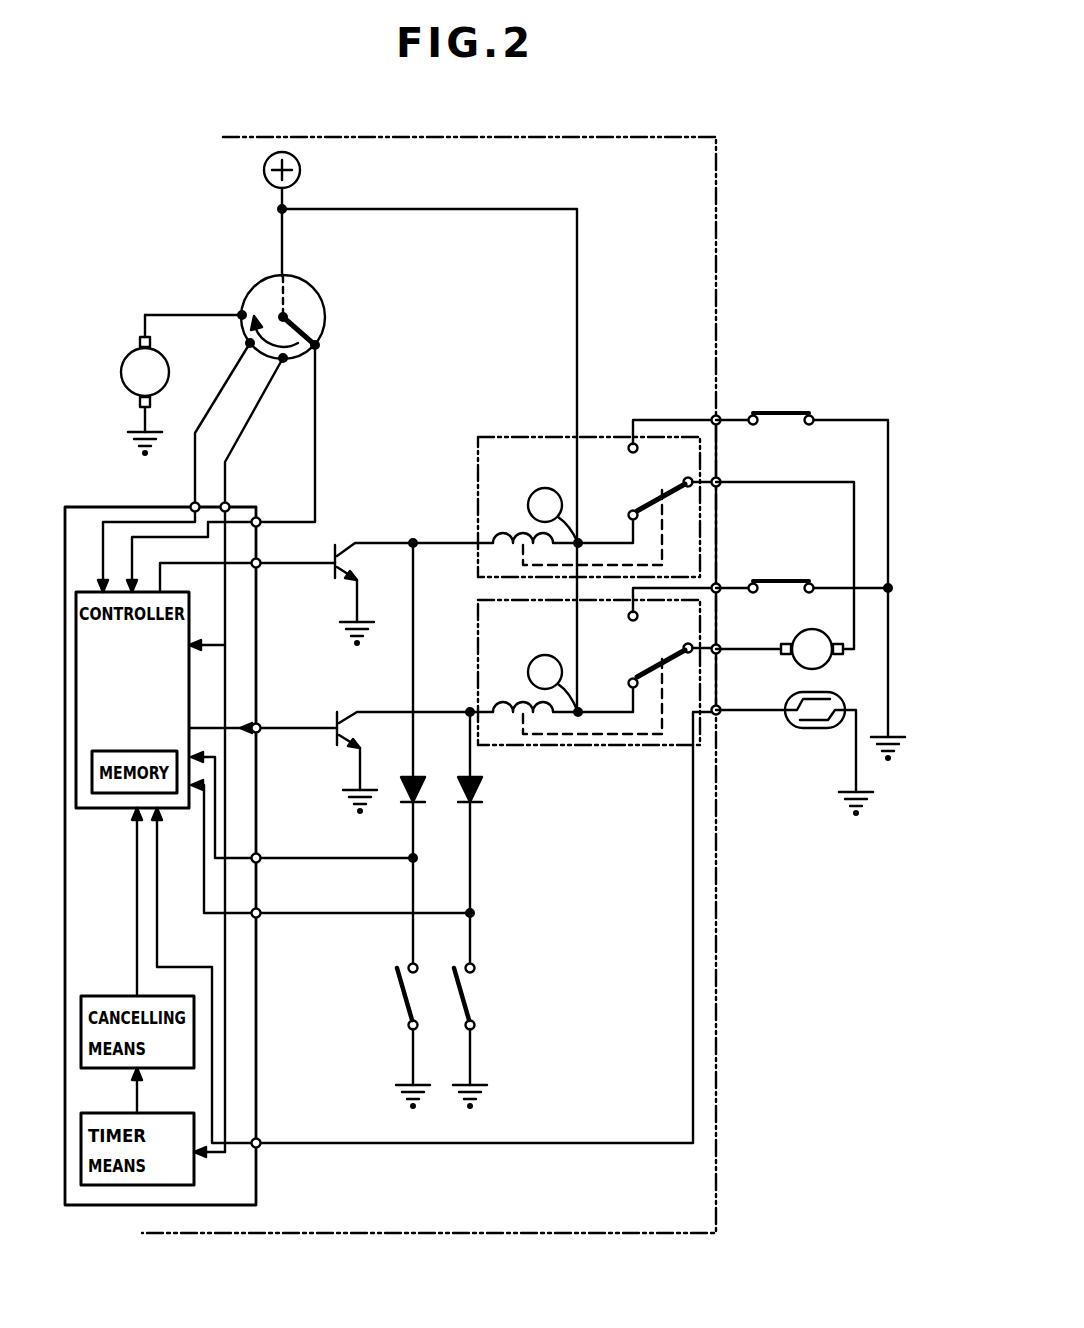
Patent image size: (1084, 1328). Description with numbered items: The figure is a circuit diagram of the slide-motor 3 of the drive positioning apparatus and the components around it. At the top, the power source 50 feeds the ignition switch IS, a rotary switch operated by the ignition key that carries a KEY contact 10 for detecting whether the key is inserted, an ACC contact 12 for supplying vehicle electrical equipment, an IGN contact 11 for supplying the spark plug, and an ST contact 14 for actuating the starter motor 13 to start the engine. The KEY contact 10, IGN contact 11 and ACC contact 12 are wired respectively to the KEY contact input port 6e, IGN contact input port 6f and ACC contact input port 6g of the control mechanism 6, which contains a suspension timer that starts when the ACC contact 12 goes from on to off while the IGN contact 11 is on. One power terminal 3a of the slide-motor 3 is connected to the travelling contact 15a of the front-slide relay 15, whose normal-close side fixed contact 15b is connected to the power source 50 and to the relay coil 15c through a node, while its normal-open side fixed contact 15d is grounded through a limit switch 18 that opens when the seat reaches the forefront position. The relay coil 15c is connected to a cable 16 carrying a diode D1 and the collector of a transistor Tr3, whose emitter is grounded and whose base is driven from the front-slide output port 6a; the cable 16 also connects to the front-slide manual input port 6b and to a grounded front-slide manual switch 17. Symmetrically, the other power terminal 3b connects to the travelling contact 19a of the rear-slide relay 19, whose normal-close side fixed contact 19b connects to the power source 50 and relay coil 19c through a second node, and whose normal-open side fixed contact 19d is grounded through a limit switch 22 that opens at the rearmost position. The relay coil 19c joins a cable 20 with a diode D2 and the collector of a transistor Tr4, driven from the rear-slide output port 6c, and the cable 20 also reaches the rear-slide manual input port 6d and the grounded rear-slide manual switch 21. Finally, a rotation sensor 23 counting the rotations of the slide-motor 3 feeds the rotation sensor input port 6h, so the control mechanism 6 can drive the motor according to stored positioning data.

The power source 50 is at (300, 170).
The ignition switch IS is at (318, 290).
The ST contact 14 is at (242, 315).
The IGN contact 11 is at (245, 344).
The ACC contact 12 is at (286, 360).
The KEY contact 10 is at (320, 345).
The starter motor 13 is at (127, 350).
The control mechanism 6 is at (256, 541).
The IGN contact input port 6f is at (190, 505).
The ACC contact input port 6g is at (228, 505).
The KEY contact input port 6e is at (258, 520).
The front-slide output port 6a is at (258, 566).
The rear-slide output port 6c is at (258, 726).
The front-slide manual input port 6b is at (258, 856).
The rear-slide manual input port 6d is at (258, 912).
The rotation sensor input port 6h is at (258, 1141).
The transistor Tr3 is at (374, 594).
The transistor Tr4 is at (403, 762).
The cable 16 is at (413, 645).
The diode D1 is at (431, 776).
The front-slide manual switch 17 is at (380, 1005).
The cable 20 is at (470, 853).
The diode D2 is at (492, 782).
The rear-slide manual switch 21 is at (490, 998).
The front-slide relay 15 is at (606, 437).
The relay coil 15c is at (517, 533).
The travelling contact 15a is at (655, 497).
The normal-open side fixed contact 15d is at (638, 450).
The normal-close side fixed contact 15b is at (630, 517).
The rear-slide relay 19 is at (618, 745).
The relay coil 19c is at (517, 702).
The travelling contact 19a is at (655, 663).
The normal-open side fixed contact 19d is at (638, 618).
The normal-close side fixed contact 19b is at (630, 685).
The limit switch 18 is at (780, 413).
The limit switch 22 is at (780, 581).
The slide-motor 3 is at (828, 665).
The power terminal 3a is at (838, 640).
The power terminal 3b is at (780, 640).
The rotation sensor 23 is at (800, 730).